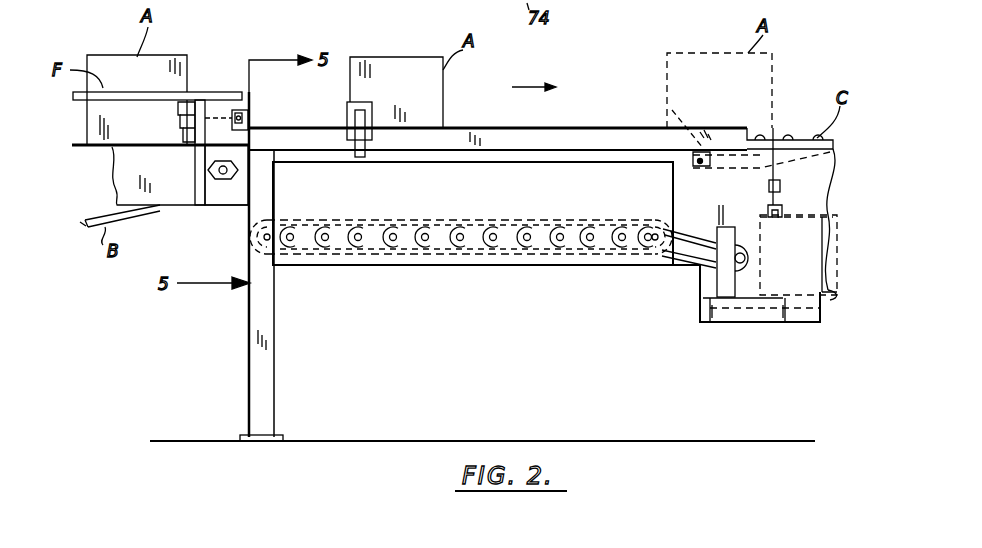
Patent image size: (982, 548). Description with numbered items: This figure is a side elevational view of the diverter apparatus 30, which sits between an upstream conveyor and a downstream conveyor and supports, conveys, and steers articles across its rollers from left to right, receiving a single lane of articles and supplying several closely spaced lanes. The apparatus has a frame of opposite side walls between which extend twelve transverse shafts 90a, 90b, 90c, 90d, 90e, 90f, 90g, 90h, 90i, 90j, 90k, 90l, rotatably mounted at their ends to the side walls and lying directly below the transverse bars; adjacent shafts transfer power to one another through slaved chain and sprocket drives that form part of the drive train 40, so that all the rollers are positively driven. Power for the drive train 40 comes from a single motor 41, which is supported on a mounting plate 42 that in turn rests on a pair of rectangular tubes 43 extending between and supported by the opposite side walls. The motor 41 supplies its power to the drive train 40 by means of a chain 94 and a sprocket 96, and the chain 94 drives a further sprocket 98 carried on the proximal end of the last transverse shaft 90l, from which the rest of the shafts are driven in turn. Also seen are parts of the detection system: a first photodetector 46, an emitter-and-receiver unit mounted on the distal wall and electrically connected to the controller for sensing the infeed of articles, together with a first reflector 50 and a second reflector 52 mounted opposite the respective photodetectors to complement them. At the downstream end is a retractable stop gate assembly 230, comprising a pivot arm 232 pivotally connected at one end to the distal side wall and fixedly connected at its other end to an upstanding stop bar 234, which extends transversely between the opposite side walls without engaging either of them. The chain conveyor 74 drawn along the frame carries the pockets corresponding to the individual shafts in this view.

The diverter apparatus 30 is at (583, 99).
The drive train 40 is at (411, 262).
The motor 41 is at (831, 292).
The mounting plate 42 is at (748, 307).
The rectangular tubes 43 is at (700, 322).
The first photodetector 46 is at (250, 116).
The first reflector 50 is at (181, 100).
The second reflector 52 is at (362, 107).
The conveyor chain 74 is at (340, 222).
The transverse shaft 90a is at (292, 227).
The transverse shaft 90b is at (322, 246).
The transverse shaft 90c is at (358, 227).
The transverse shaft 90d is at (388, 252).
The transverse shaft 90e is at (427, 228).
The transverse shaft 90f is at (460, 250).
The transverse shaft 90g is at (491, 250).
The transverse shaft 90h is at (524, 227).
The transverse shaft 90i is at (556, 252).
The transverse shaft 90j is at (588, 232).
The transverse shaft 90k is at (620, 248).
The last transverse shaft 90l is at (652, 232).
The chain 94 is at (686, 262).
The sprocket 96 is at (738, 223).
The sprocket 98 is at (662, 247).
The retractable stop gate assembly 230 is at (778, 128).
The pivot arm 232 is at (703, 152).
The stop bar 234 is at (831, 153).